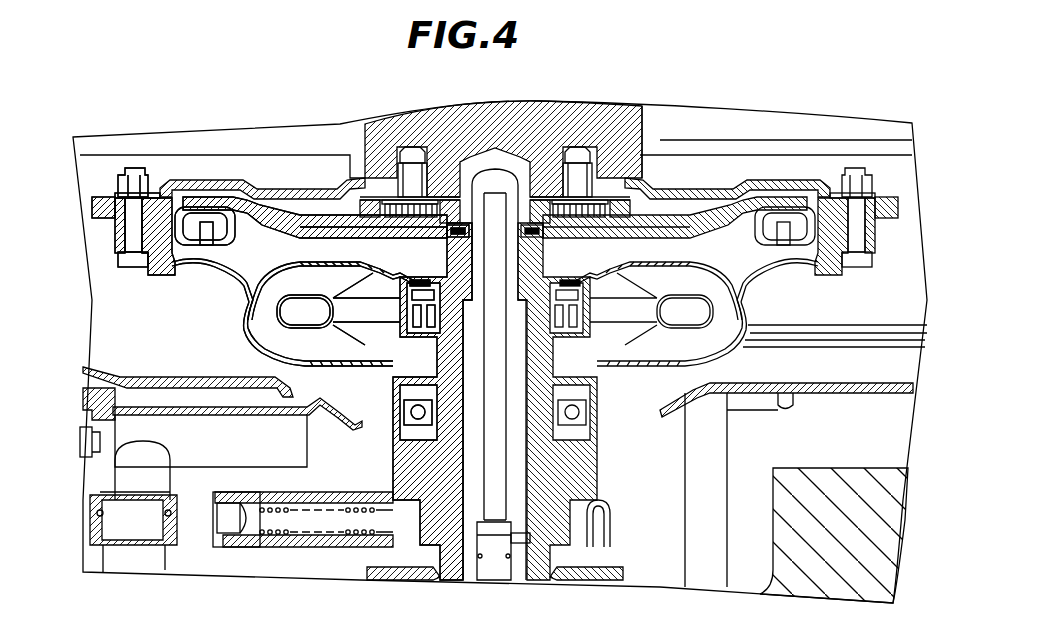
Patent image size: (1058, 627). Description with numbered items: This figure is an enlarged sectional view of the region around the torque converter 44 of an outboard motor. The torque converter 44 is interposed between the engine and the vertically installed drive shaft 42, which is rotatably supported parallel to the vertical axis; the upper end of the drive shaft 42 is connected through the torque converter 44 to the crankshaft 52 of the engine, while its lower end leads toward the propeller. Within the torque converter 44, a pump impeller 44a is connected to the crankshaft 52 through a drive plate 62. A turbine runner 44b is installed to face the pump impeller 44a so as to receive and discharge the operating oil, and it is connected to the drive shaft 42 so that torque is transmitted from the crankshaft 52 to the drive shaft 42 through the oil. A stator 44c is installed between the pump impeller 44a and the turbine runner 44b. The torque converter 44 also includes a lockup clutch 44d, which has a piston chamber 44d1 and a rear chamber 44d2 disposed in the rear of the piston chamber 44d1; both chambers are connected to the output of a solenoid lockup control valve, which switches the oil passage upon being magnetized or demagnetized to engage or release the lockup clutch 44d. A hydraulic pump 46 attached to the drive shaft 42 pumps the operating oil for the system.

The drive shaft 42 is at (518, 557).
The torque converter 44 is at (511, 218).
The pump impeller 44a is at (727, 347).
The turbine runner 44b is at (742, 195).
The stator 44c is at (658, 323).
The lockup clutch 44d is at (790, 205).
The piston chamber 44d1 is at (655, 250).
The rear chamber 44d2 is at (710, 250).
The hydraulic pump 46 is at (613, 467).
The crankshaft 52 is at (550, 108).
The drive plate 62 is at (810, 177).